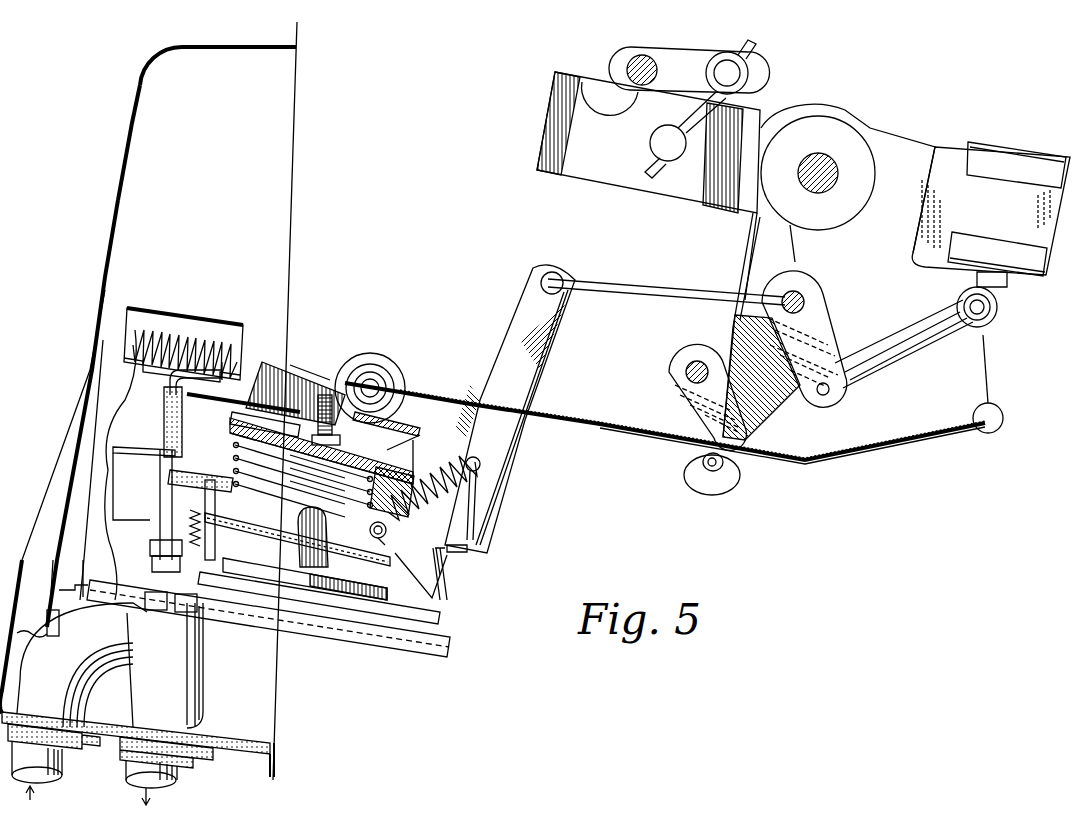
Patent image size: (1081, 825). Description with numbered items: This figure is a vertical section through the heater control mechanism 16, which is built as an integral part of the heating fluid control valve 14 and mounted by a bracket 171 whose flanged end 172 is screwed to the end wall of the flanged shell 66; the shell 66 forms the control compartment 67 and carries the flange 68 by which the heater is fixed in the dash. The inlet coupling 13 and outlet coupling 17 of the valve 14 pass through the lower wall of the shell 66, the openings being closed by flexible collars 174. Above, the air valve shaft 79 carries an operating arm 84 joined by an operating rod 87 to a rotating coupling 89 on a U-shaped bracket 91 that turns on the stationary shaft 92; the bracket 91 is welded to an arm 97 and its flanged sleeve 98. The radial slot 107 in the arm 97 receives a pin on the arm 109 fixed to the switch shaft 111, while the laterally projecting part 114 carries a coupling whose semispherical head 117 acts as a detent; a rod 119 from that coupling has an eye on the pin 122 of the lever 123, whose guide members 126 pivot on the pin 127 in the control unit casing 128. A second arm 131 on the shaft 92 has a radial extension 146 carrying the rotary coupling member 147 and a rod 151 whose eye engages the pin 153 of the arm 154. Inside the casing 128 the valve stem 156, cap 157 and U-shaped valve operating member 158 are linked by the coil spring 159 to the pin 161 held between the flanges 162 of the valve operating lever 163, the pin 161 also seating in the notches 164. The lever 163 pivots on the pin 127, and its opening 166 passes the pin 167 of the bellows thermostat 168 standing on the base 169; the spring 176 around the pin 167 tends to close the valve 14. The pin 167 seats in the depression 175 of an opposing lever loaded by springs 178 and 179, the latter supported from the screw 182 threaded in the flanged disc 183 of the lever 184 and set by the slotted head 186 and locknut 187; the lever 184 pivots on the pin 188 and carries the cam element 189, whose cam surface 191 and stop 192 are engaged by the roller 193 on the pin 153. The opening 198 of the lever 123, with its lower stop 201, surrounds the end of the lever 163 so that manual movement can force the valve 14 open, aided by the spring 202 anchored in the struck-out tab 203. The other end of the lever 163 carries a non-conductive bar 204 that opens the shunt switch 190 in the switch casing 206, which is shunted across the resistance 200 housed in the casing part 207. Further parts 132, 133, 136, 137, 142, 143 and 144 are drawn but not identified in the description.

The inlet coupling 13 is at (44, 783).
The heating fluid control valve 14 is at (195, 688).
The temperature responsive heating fluid control mechanism 16 is at (443, 406).
The outlet coupling 17 is at (180, 778).
The flanged shell 66 is at (131, 125).
The control compartment 67 is at (148, 200).
The flange 68 is at (292, 33).
The shaft 79 is at (628, 68).
The operating arm 84 is at (680, 56).
The operating rod 87 is at (752, 62).
The rotating coupling 89 is at (655, 147).
The U-shaped bracket 91 is at (548, 145).
The stationary shaft 92 is at (838, 178).
The arm 97 is at (915, 145).
The flanged sleeve 98 is at (845, 202).
The radial slot 107 is at (820, 395).
The arm 109 is at (830, 335).
The shaft 111 is at (805, 298).
The laterally projecting part 114 is at (880, 376).
The semispherical head 117 is at (962, 318).
The rod 119 is at (650, 282).
The pin 122 is at (540, 284).
The pivotally mounted lever 123 is at (560, 330).
The guide members 126 is at (398, 480).
The pin 127 is at (388, 528).
The control unit casing 128 is at (180, 376).
The arm 131 is at (719, 326).
The pin 132 is at (725, 478).
The eye 133 is at (695, 488).
The lever 136 is at (682, 402).
The pivot pin 137 is at (686, 371).
The solenoid 142 is at (975, 150).
The coil end 143 is at (935, 235).
The coil end 144 is at (1015, 140).
The radial extension 146 is at (987, 345).
The rotary coupling member 147 is at (1000, 410).
The rod 151 is at (878, 455).
The pin 153 is at (376, 386).
The arm 154 is at (325, 393).
The valve stem 156 is at (158, 610).
The cap 157 is at (195, 616).
The U-shaped valve operating member 158 is at (160, 556).
The coil spring 159 is at (164, 540).
The pin 161 is at (162, 470).
The flanges 162 is at (222, 545).
The valve operating lever 163 is at (450, 560).
The notches 164 is at (208, 480).
The opening 166 is at (330, 560).
The pin 167 is at (240, 576).
The bellows thermostat 168 is at (427, 600).
The base 169 is at (445, 610).
The bracket 171 is at (398, 645).
The flanged end 172 is at (52, 610).
The flexible collars 174 is at (110, 752).
The depression 175 is at (322, 505).
The spring 176 is at (220, 413).
The spring 178 is at (258, 424).
The spring 179 is at (248, 474).
The screw 182 is at (318, 420).
The flanged disc 183 is at (365, 414).
The lever 184 is at (412, 436).
The slotted head 186 is at (352, 360).
The locknut and washer 187 is at (280, 418).
The pin 188 is at (414, 462).
The cam element 189 is at (276, 362).
The shunt switch 190 is at (113, 450).
The cam surface 191 is at (300, 372).
The stop 192 is at (420, 394).
The roller 193 is at (378, 356).
The opening 198 is at (468, 547).
The electrical resistance 200 is at (195, 322).
The stop 201 is at (480, 520).
The spring 202 is at (478, 476).
The struck-out tab 203 is at (500, 448).
The bar 204 is at (205, 470).
The switch casing 206 is at (112, 418).
The casing part 207 is at (135, 305).